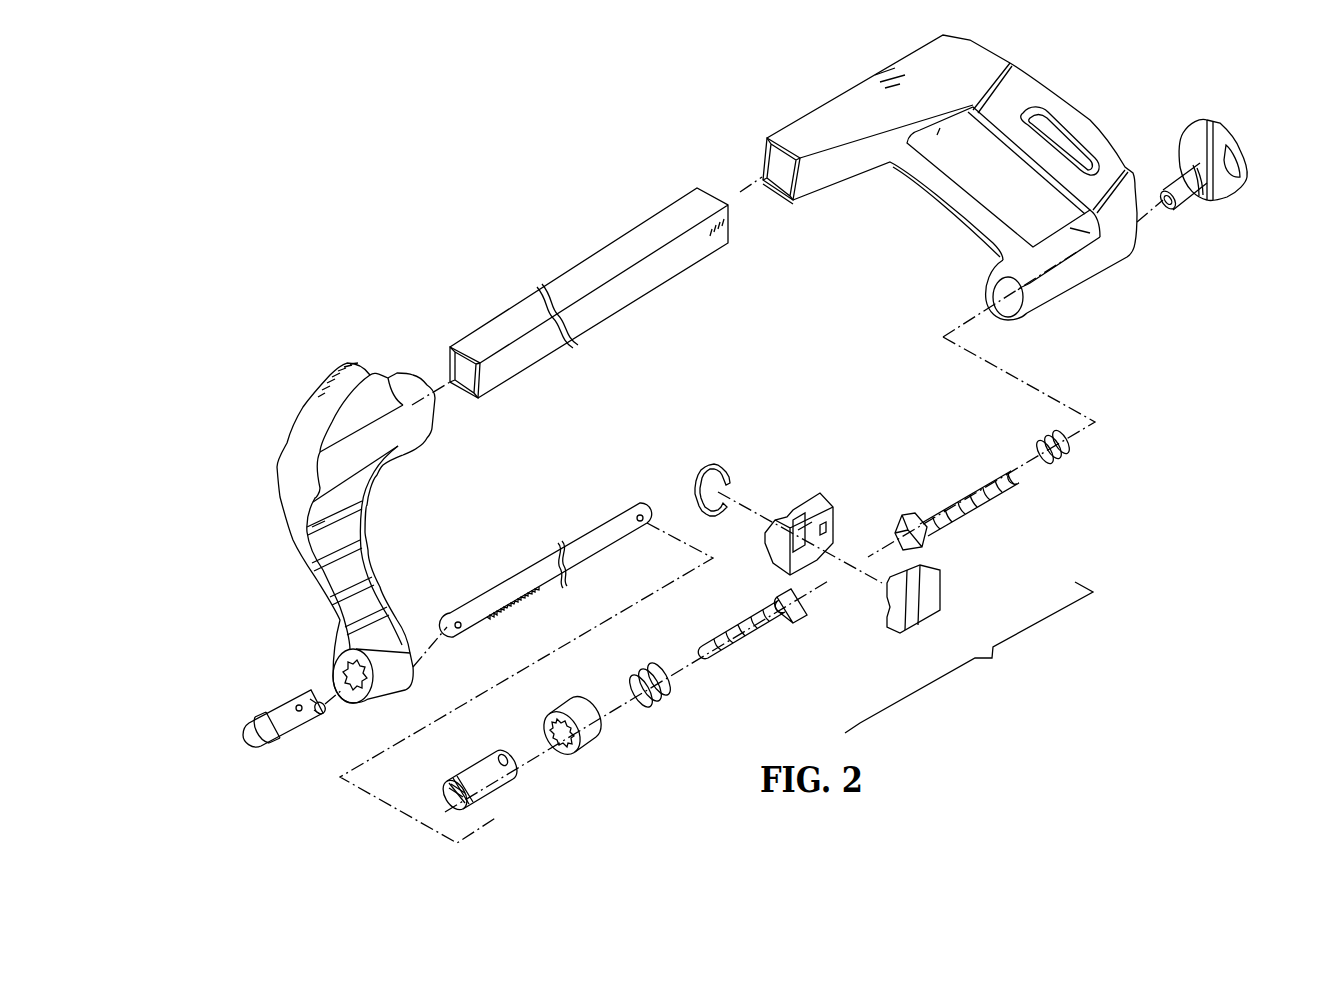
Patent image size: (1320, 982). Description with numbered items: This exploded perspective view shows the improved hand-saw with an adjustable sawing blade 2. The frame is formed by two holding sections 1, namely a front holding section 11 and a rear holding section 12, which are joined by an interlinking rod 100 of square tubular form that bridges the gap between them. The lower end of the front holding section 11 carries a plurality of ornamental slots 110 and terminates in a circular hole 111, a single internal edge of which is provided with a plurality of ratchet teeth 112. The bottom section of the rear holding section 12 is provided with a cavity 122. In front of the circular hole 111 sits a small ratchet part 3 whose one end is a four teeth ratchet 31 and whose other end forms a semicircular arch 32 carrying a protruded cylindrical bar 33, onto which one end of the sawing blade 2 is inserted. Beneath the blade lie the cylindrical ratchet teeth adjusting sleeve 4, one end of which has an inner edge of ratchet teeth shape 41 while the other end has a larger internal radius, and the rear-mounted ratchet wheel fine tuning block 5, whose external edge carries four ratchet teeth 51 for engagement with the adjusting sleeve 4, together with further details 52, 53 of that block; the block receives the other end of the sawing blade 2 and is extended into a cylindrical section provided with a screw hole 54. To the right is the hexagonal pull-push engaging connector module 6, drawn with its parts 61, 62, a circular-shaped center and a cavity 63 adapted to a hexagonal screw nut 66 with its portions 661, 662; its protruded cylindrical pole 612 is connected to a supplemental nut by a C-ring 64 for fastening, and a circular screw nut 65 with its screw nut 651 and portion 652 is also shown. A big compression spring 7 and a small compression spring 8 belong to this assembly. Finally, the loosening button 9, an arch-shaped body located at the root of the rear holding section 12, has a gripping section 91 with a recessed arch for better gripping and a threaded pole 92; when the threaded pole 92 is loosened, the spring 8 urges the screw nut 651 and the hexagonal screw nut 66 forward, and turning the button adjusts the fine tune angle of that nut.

The holding sections 1 is at (282, 400).
The front holding section 11 is at (320, 533).
The ornamental slot 110 is at (337, 570).
The circular hole 111 is at (337, 663).
The ratchet teeth 112 is at (333, 673).
The rear holding section 12 is at (950, 194).
The cavity 122 is at (1017, 303).
The interlinking rod 100 is at (600, 270).
The sawing blade 2 is at (537, 577).
The adjusting lever 3 is at (255, 734).
The four teeth ratchet 31 is at (255, 720).
The semicircular arch 32 is at (302, 712).
The protruded cylindrical bar 33 is at (318, 715).
The ratchet teeth adjusting sleeve 4 is at (582, 750).
The ratchet teeth shape 41 is at (563, 755).
The rear-mounted ratchet wheel fine tuning block 5 is at (471, 777).
The four ratchet teeth 51 is at (492, 795).
The end of blade holder 52 is at (447, 785).
The flange of blade holder 53 is at (453, 780).
The screw hole 54 is at (505, 753).
The hexagonal pull-push engaging connector module 6 is at (969, 657).
The tension block 61 is at (821, 499).
The protruded cylindrical pole 612 is at (828, 503).
The cavity 63 is at (793, 513).
The clamp block 62 is at (938, 590).
The C-ring 64 is at (717, 463).
The circular screw nut 65 is at (780, 646).
The screw nut 651 is at (800, 617).
The threaded shank of bolt 652 is at (795, 653).
The hexagonal screw nut 66 is at (989, 527).
The hex head of bolt 661 is at (927, 540).
The threaded shank of bolt 662 is at (995, 497).
The big compression spring 7 is at (665, 695).
The small compression spring 8 is at (1067, 455).
The loosening button 9 is at (1232, 191).
The gripping section 91 is at (1248, 178).
The threaded pole 92 is at (1187, 197).